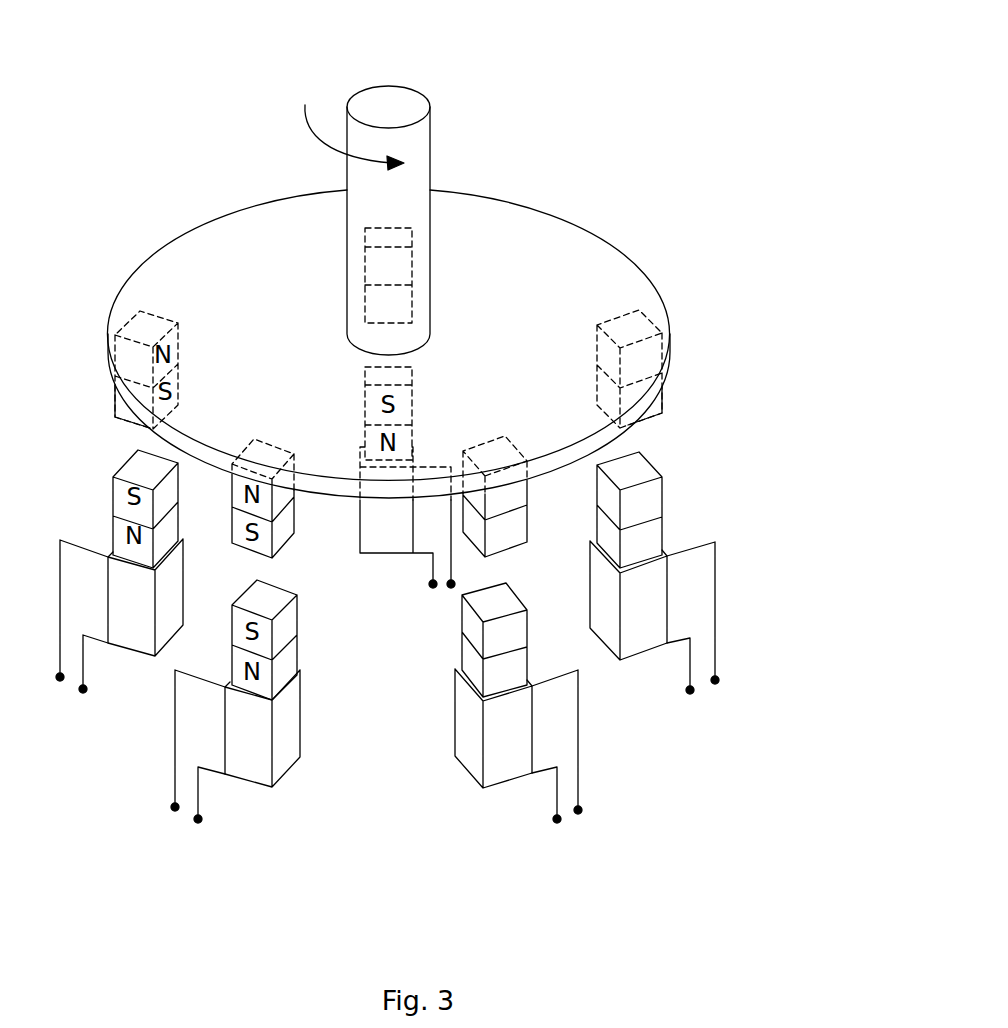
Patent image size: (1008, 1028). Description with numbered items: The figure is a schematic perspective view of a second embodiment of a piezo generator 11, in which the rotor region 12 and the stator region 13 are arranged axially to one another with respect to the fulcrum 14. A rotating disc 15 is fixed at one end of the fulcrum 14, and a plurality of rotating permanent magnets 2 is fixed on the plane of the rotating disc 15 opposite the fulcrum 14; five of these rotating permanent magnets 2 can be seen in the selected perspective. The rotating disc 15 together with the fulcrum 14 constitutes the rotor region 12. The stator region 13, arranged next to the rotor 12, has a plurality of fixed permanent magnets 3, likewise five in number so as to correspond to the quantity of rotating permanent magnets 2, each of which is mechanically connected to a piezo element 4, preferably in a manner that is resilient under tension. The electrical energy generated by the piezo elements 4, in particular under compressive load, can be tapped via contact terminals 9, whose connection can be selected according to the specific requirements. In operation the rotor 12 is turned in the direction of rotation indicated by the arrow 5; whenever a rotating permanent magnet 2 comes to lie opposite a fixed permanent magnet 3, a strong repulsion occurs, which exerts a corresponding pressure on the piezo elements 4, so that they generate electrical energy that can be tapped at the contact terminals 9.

The rotating permanent magnet 2 is at (522, 543).
The fixed permanent magnet 3 is at (465, 638).
The piezo element 4 is at (465, 712).
The arrow showing the direction of rotation 5 is at (332, 152).
The contact terminal 9 is at (579, 814).
The piezo generator 11 is at (712, 264).
The rotor region 12 is at (716, 340).
The stator region 13 is at (747, 590).
The fulcrum 14 is at (388, 107).
The rotating disc 15 is at (570, 255).